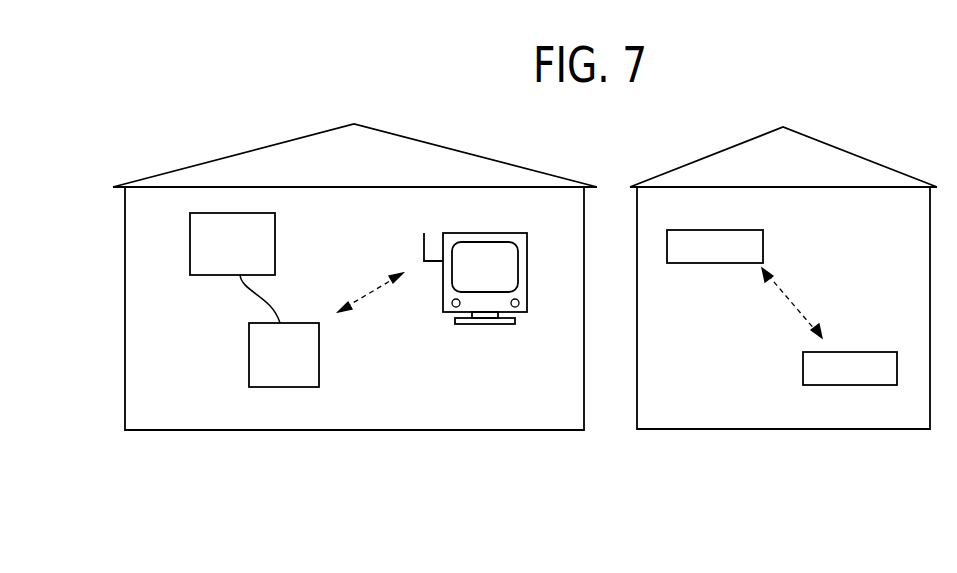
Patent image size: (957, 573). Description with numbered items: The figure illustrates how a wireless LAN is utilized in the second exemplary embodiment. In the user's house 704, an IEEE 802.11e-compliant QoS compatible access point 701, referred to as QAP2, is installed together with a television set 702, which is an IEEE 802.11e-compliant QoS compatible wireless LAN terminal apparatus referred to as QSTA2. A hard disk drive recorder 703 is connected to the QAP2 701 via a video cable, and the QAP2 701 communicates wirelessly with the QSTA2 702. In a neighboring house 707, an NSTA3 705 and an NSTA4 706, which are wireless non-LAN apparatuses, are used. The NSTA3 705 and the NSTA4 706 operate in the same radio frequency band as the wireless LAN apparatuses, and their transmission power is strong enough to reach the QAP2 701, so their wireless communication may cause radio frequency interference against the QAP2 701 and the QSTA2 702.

The QoS compatible access point 701 is at (319, 362).
The television set 702 is at (485, 324).
The hard disk drive recorder 703 is at (275, 243).
The user's house 704 is at (383, 431).
The NSTA3 705 is at (710, 263).
The NSTA4 706 is at (860, 352).
The neighboring house 707 is at (783, 430).